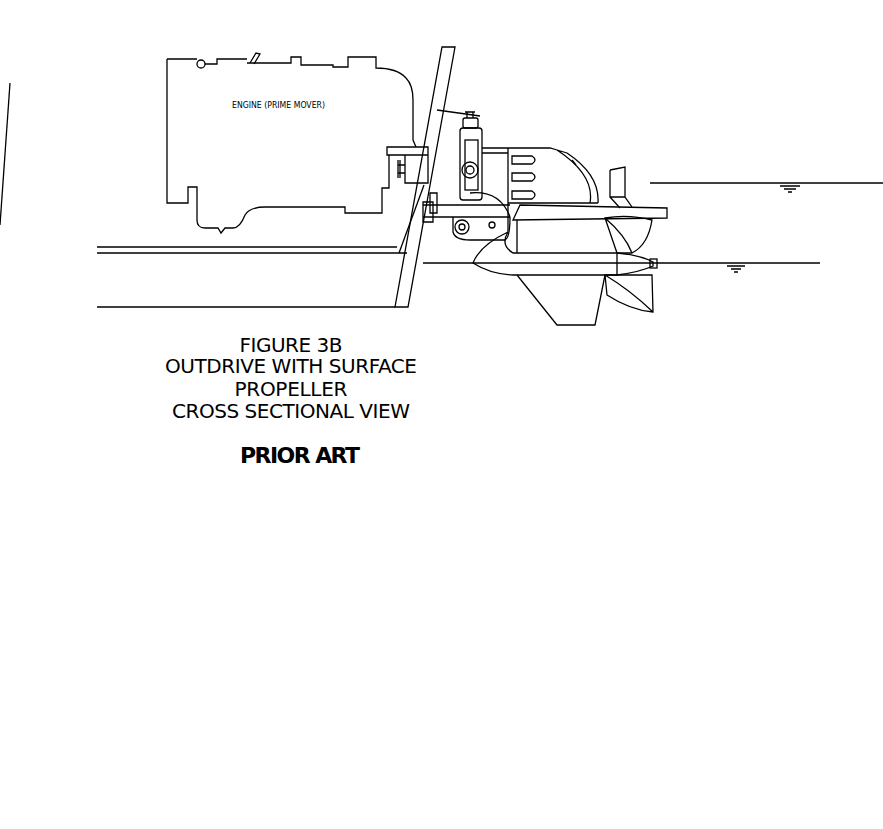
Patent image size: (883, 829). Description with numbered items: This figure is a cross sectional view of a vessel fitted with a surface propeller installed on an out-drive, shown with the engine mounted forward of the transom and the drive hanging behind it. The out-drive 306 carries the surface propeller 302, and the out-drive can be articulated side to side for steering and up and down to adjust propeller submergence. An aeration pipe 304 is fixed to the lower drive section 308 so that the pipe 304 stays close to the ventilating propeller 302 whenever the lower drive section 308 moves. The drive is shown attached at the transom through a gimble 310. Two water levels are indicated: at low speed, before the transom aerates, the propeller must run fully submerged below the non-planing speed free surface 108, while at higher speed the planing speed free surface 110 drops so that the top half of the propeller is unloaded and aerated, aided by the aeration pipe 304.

The surface propeller 302 is at (645, 293).
The aeration pipe 304 is at (622, 180).
The out-drive 306 is at (568, 148).
The lower drive section 308 is at (563, 305).
The gimble 310 is at (488, 148).
The non-planing speed free surface 108 is at (727, 183).
The planing speed free surface 110 is at (787, 263).